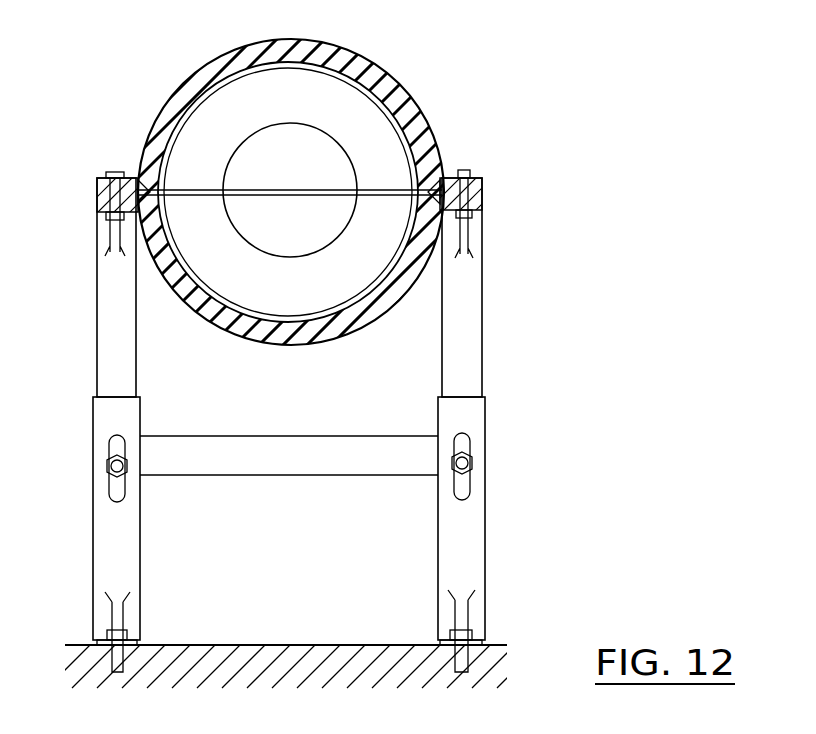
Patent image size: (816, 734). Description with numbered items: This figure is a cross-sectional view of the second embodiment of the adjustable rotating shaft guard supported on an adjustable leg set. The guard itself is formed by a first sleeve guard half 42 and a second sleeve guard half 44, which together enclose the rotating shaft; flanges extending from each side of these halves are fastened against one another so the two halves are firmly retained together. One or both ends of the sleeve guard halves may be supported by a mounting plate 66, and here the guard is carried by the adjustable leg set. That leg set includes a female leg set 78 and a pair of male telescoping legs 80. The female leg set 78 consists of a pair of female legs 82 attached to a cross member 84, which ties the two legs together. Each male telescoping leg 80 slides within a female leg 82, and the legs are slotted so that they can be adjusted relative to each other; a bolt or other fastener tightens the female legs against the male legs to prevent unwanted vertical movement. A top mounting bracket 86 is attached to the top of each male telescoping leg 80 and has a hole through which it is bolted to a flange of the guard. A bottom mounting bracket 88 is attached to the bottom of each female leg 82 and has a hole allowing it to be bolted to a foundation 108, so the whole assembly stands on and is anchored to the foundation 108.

The first sleeve guard half 42 is at (312, 349).
The second sleeve guard half 44 is at (378, 63).
The mounting plate 66 is at (568, 420).
The female leg set 78 is at (487, 535).
The male telescoping leg 80 is at (482, 334).
The female leg 82 is at (92, 513).
The cross member 84 is at (300, 476).
The top mounting bracket 86 is at (482, 212).
The bottom mounting bracket 88 is at (483, 632).
The foundation 108 is at (315, 645).